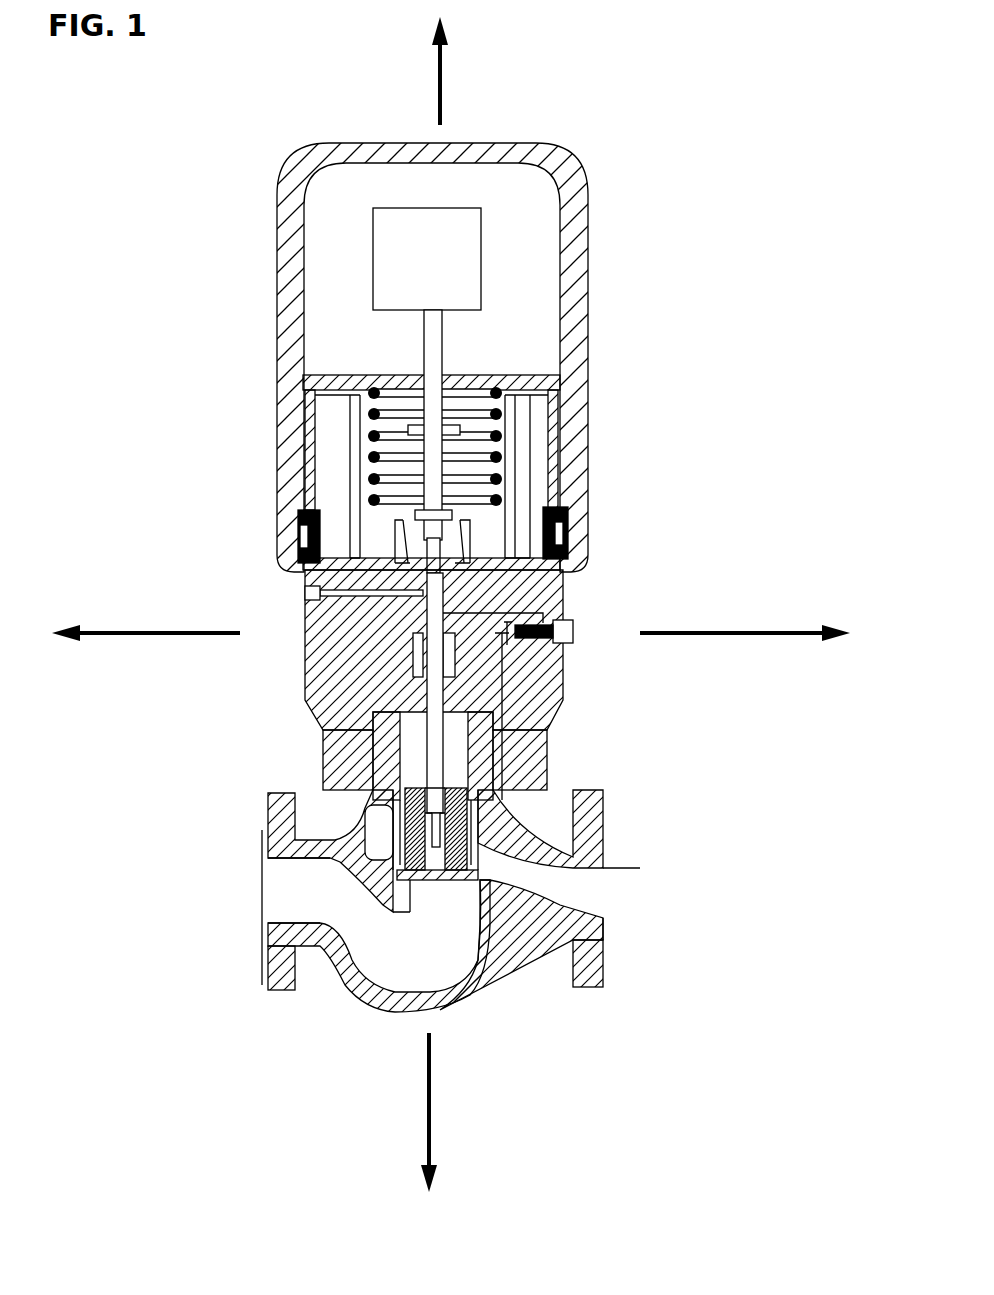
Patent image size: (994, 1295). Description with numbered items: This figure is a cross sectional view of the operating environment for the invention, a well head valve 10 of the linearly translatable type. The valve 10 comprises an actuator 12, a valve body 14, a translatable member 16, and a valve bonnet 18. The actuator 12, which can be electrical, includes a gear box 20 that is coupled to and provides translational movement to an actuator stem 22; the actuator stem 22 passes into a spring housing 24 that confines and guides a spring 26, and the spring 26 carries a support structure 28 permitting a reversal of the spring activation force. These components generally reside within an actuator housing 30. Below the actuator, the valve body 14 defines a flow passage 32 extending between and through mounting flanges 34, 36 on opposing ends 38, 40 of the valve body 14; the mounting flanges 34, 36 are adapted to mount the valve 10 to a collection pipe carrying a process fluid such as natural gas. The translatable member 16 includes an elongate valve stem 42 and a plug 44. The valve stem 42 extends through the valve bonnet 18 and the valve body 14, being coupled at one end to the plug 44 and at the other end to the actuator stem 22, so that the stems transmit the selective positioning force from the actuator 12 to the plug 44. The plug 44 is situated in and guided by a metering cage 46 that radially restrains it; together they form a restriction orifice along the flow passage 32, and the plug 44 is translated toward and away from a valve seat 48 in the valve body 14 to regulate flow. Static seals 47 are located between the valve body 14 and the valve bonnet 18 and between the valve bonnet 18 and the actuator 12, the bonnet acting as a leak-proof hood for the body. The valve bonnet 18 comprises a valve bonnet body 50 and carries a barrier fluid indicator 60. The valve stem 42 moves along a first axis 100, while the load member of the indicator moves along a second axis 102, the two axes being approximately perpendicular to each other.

The valve 10 is at (630, 296).
The actuator 12 is at (628, 240).
The valve body 14 is at (487, 1032).
The translatable member 16 is at (410, 763).
The valve bonnet 18 is at (276, 607).
The gear box 20 is at (467, 258).
The actuator stem 22 is at (432, 340).
The spring housing 24 is at (560, 470).
The spring 26 is at (500, 432).
The support structure 28 is at (413, 427).
The actuator housing 30 is at (562, 166).
The flow passage 32 is at (302, 888).
The mounting flange 34 is at (283, 990).
The mounting flange 36 is at (580, 987).
The end of the valve body 38 is at (262, 940).
The end of the valve body 40 is at (603, 928).
The valve stem 42 is at (433, 753).
The plug 44 is at (565, 868).
The metering cage 46 is at (373, 802).
The static seal 47 is at (562, 573).
The valve seat 48 is at (563, 904).
The valve bonnet body 50 is at (330, 698).
The barrier fluid indicator 60 is at (595, 628).
The first axis 100 is at (447, 73).
The second axis 102 is at (182, 633).